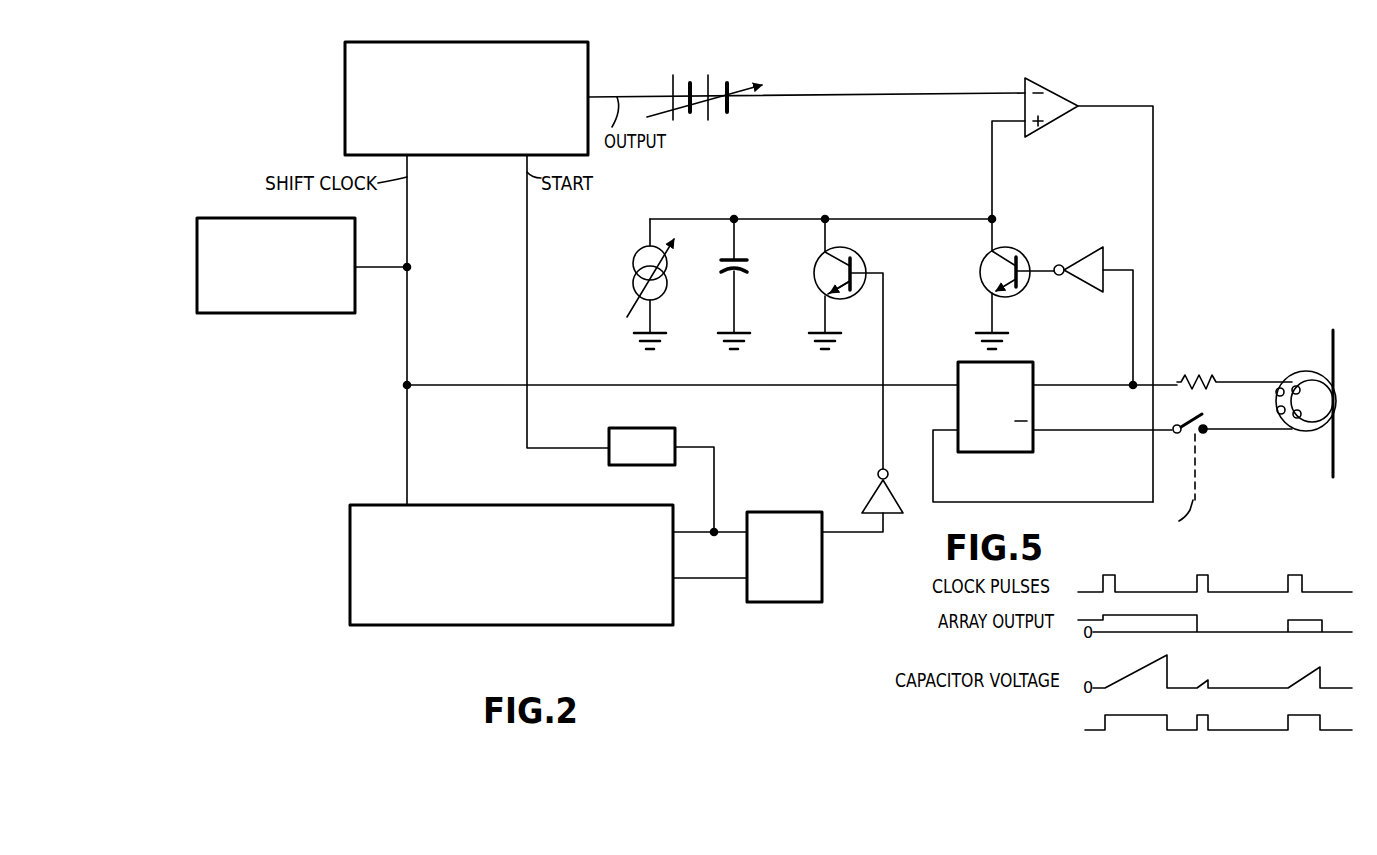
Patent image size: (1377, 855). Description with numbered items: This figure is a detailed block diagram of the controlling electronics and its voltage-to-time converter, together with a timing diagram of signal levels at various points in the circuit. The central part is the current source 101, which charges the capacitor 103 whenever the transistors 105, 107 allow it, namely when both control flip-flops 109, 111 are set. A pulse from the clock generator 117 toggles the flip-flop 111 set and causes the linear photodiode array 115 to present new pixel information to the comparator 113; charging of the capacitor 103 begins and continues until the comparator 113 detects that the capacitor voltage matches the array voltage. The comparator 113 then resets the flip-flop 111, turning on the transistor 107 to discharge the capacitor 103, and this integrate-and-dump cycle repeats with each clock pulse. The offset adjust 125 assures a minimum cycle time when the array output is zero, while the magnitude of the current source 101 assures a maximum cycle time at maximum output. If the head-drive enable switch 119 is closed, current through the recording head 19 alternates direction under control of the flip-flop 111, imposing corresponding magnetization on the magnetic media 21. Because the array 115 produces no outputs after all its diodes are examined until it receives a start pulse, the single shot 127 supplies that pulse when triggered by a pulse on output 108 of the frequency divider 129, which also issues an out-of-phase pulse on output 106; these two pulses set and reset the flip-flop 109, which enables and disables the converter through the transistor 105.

In FIG. 2, the linear photodiode array 115 is at (496, 44).
In FIG. 2, the offset adjust 125 is at (705, 80).
In FIG. 2, the comparator 113 is at (1049, 90).
In FIG. 2, the current source 101 is at (633, 262).
In FIG. 2, the capacitor 103 is at (727, 257).
In FIG. 2, the transistor 105 is at (853, 255).
In FIG. 2, the transistor 107 is at (1000, 248).
In FIG. 2, the flip-flop 111 is at (985, 452).
In FIG. 5, the flip-flop 111 is at (1181, 718).
In FIG. 2, the recording head 19 is at (1313, 375).
In FIG. 2, the magnetic media 21 is at (1331, 453).
In FIG. 2, the head-drive enable switch 119 is at (1201, 434).
In FIG. 2, the clock generator 117 is at (268, 311).
In FIG. 2, the frequency divider 129 is at (350, 556).
In FIG. 2, the single shot 127 is at (670, 438).
In FIG. 2, the output 108 is at (696, 532).
In FIG. 2, the output 106 is at (697, 579).
In FIG. 2, the flip-flop 109 is at (822, 577).